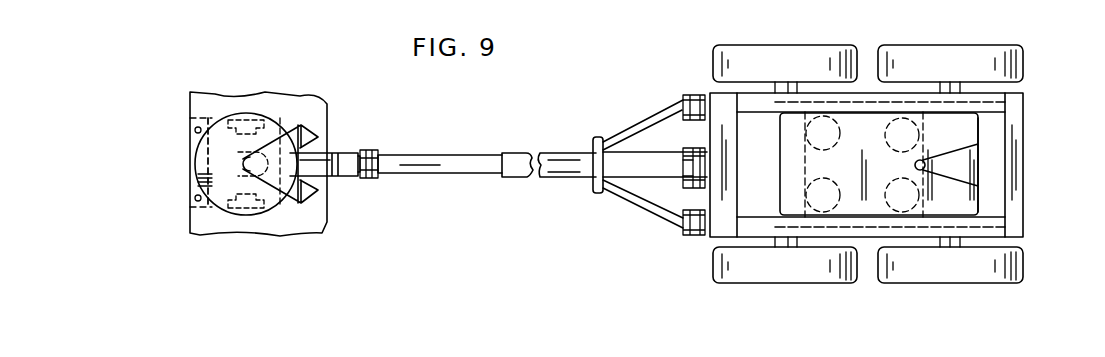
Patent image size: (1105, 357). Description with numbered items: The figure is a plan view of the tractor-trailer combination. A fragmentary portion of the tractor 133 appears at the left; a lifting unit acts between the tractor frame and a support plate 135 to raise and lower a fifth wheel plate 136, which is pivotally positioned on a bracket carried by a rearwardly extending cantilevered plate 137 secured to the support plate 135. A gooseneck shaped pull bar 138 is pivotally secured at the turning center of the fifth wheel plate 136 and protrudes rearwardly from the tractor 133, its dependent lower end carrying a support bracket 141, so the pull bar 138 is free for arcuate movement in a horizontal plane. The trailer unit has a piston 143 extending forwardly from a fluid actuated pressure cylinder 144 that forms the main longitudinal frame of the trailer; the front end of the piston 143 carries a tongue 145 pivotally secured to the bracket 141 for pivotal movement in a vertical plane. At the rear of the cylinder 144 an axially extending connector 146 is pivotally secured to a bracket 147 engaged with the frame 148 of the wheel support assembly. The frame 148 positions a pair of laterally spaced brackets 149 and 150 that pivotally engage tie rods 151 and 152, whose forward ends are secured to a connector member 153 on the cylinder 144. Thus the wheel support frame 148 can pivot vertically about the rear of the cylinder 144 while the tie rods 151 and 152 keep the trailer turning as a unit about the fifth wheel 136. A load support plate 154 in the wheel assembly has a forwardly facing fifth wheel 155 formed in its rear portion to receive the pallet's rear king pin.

The tractor 133 is at (178, 194).
The support plate 135 is at (198, 106).
The fifth wheel plate 136 is at (248, 117).
The cantilevered plate 137 is at (192, 138).
The pull bar 138 is at (343, 162).
The support bracket 141 is at (377, 153).
The piston 143 is at (438, 160).
The fluid actuated pressure cylinder 144 is at (522, 172).
The tongue 145 is at (377, 172).
The connector 146 is at (677, 163).
The bracket 147 is at (685, 184).
The frame 148 is at (748, 91).
The bracket 149 is at (693, 92).
The bracket 150 is at (688, 240).
The tie rod 151 is at (655, 118).
The tie rod 152 is at (638, 202).
The connector member 153 is at (593, 145).
The load support plate 154 is at (795, 168).
The fifth wheel 155 is at (967, 132).